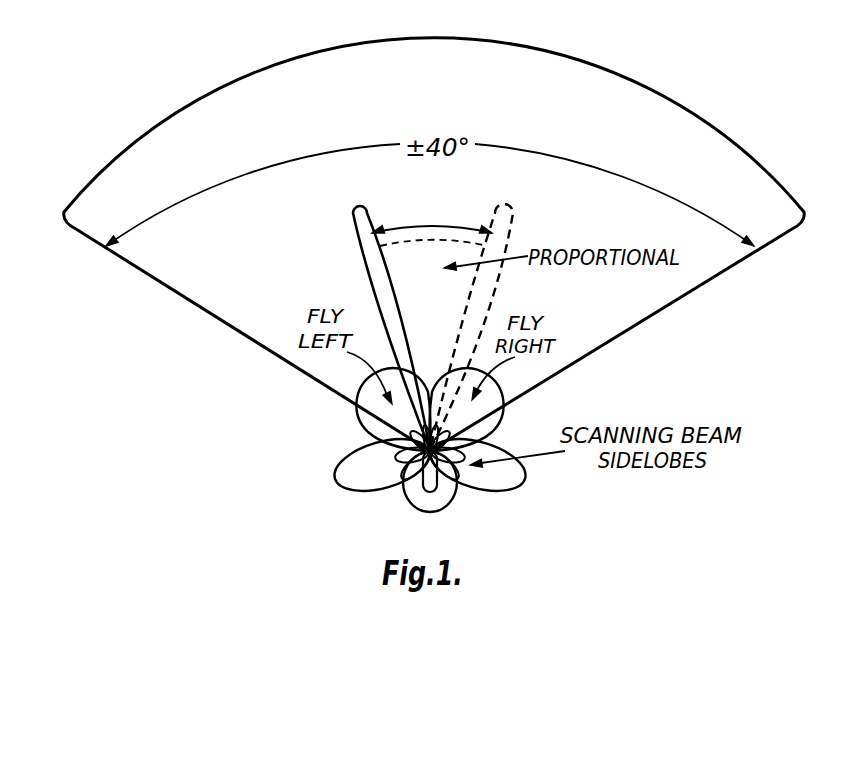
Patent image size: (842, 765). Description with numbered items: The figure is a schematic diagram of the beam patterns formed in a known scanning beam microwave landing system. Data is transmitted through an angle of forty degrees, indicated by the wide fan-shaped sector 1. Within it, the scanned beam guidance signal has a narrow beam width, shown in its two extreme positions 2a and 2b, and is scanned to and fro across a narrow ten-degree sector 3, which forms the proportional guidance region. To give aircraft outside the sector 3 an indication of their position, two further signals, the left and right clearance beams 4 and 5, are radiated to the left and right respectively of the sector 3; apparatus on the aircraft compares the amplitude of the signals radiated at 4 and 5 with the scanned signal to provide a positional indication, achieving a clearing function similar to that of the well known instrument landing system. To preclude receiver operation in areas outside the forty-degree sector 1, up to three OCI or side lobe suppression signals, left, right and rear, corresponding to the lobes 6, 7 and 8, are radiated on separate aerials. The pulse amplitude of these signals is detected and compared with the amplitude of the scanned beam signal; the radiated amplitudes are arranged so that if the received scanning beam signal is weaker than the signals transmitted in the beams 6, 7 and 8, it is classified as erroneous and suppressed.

The sector 1 is at (747, 143).
The scanned beam guidance signal 2a is at (361, 208).
The scanned beam guidance signal 2b is at (511, 214).
The sector 3 is at (470, 228).
The left clearance beam 4 is at (363, 413).
The right clearance beam 5 is at (500, 414).
The lobe 6 is at (336, 476).
The lobe 7 is at (520, 485).
The lobe 8 is at (420, 511).